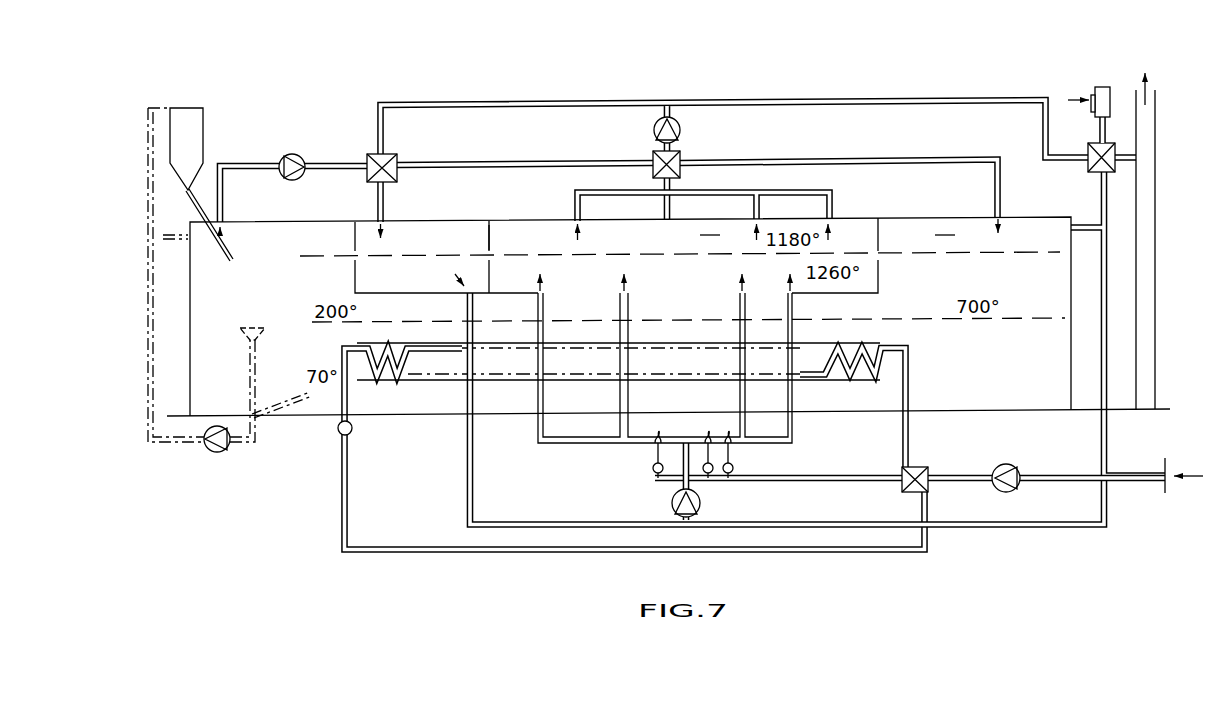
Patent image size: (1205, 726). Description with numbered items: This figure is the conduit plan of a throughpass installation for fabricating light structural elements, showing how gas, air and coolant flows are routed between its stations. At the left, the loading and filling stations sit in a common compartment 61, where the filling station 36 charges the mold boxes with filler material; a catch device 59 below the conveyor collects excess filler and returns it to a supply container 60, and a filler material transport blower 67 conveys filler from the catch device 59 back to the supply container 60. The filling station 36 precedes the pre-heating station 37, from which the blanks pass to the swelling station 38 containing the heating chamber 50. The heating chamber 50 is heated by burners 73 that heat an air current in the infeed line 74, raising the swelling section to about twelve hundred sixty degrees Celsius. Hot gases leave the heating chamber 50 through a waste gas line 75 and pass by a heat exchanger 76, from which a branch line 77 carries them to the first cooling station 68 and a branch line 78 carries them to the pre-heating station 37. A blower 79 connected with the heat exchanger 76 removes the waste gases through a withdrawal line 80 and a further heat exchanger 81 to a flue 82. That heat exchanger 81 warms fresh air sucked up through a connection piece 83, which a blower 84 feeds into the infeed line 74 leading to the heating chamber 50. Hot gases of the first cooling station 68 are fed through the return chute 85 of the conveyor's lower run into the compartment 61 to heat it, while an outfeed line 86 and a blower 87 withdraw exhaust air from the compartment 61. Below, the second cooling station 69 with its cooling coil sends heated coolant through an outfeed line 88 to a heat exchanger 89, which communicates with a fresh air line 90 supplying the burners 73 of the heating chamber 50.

The filling station 36 is at (331, 194).
The pre-heating station 37 is at (433, 189).
The swelling station 38 is at (711, 239).
The heating chamber 50 is at (647, 247).
The catch device 59 is at (245, 333).
The supply container 60 is at (190, 117).
The compartment 61 is at (257, 240).
The filler material transport blower 67 is at (210, 452).
The first cooling station 68 is at (946, 184).
The second cooling station 69 is at (585, 363).
The burners 73 is at (734, 463).
The infeed line 74 is at (793, 429).
The waste gas line 75 is at (834, 201).
The heat exchanger 76 is at (653, 156).
The branch line 77 is at (873, 159).
The branch line 78 is at (530, 162).
The blower 79 is at (681, 128).
The withdrawal line 80 is at (836, 100).
The heat exchanger 81 is at (1090, 165).
The flue 82 is at (1155, 135).
The connection piece 83 is at (1100, 87).
The blower 84 is at (671, 503).
The return chute 85 is at (855, 308).
The outfeed line 86 is at (233, 163).
The blower 87 is at (288, 155).
The outfeed line 88 is at (909, 390).
The heat exchanger 89 is at (912, 467).
The fresh air line 90 is at (825, 476).